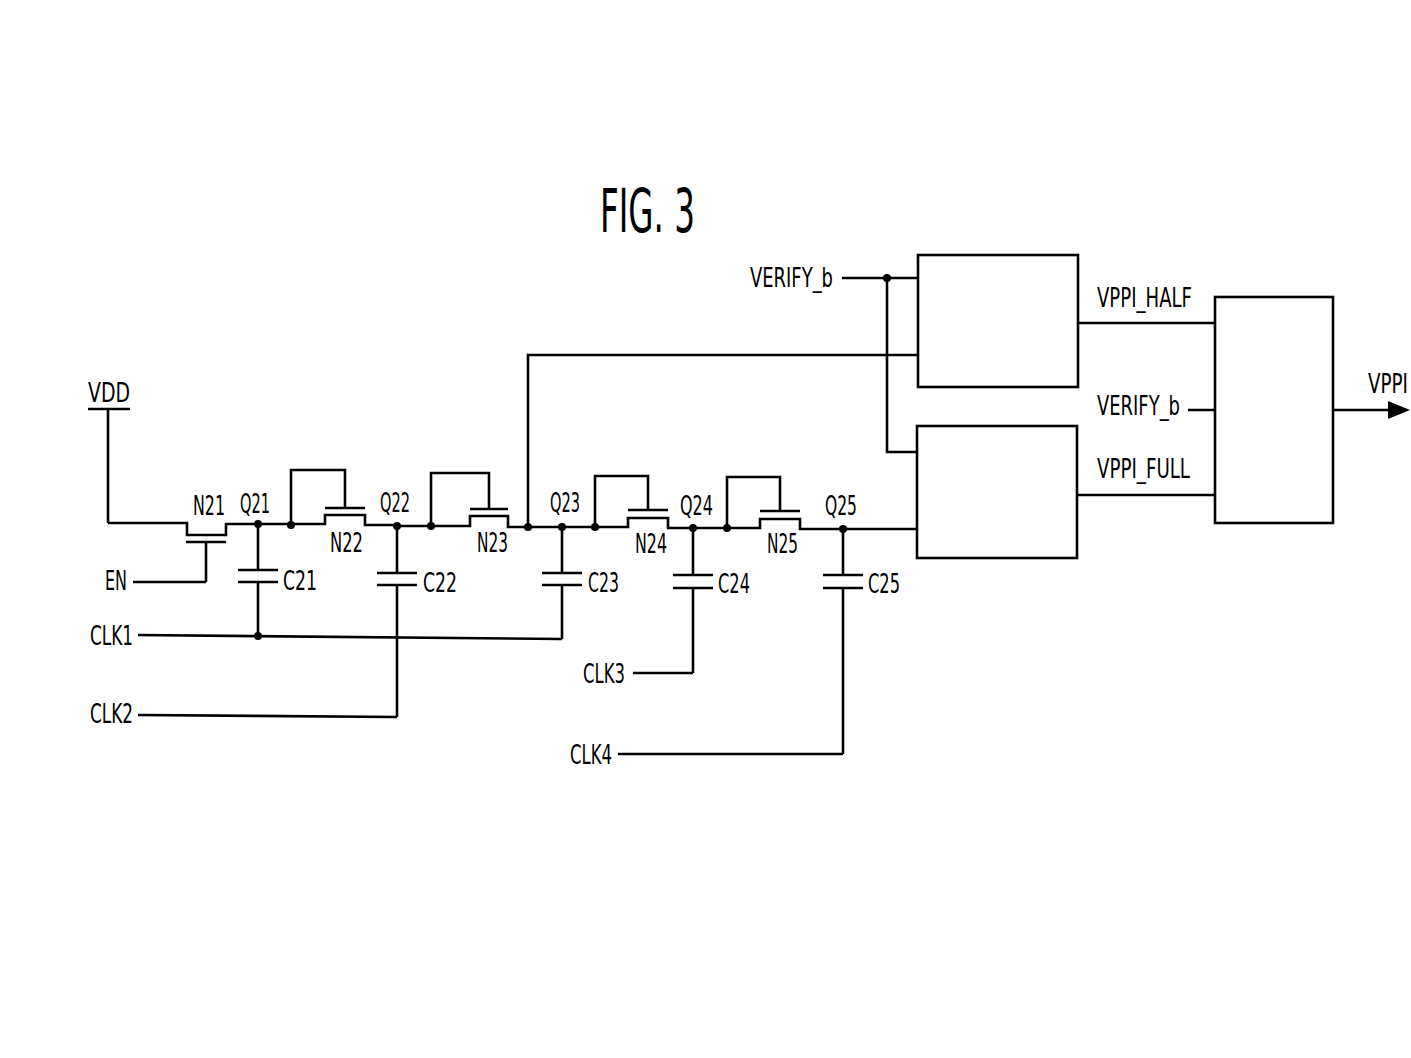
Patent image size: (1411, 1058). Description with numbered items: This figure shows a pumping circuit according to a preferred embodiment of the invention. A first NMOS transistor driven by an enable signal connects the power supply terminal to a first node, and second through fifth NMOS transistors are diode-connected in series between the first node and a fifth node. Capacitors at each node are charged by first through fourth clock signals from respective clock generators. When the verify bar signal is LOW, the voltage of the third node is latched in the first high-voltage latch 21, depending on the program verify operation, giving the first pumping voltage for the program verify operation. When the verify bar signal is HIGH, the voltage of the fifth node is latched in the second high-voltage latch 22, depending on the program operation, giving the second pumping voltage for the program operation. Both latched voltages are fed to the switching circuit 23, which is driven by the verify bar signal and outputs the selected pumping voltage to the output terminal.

The first high-voltage latch 21 is at (985, 255).
The second high-voltage latch 22 is at (975, 558).
The switching circuit 23 is at (1283, 297).